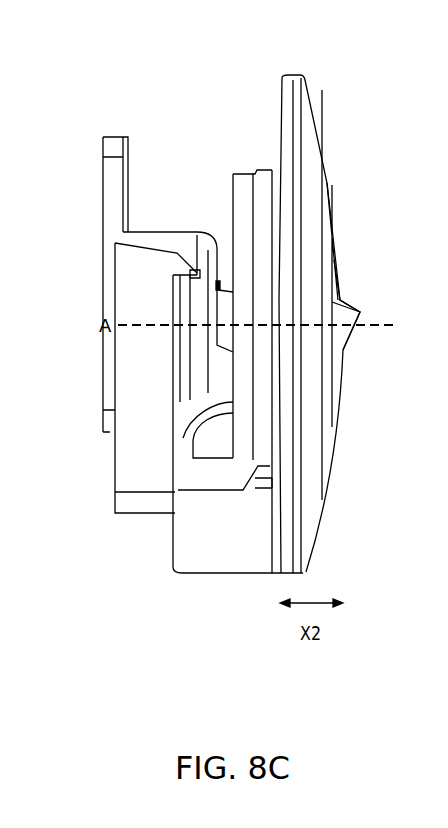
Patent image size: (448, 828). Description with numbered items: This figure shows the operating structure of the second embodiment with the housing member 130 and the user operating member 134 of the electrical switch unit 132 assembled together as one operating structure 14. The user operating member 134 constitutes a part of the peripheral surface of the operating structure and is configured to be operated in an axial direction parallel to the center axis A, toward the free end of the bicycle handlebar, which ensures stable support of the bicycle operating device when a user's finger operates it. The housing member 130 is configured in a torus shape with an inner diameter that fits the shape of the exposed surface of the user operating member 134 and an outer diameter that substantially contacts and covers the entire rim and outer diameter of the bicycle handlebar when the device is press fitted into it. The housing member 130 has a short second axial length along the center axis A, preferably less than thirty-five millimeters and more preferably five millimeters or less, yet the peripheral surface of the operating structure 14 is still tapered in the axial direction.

The housing assembly 14 is at (75, 83).
The electrical switch unit 132 is at (150, 112).
The housing member 130 is at (300, 75).
The user operating member 134 is at (338, 272).